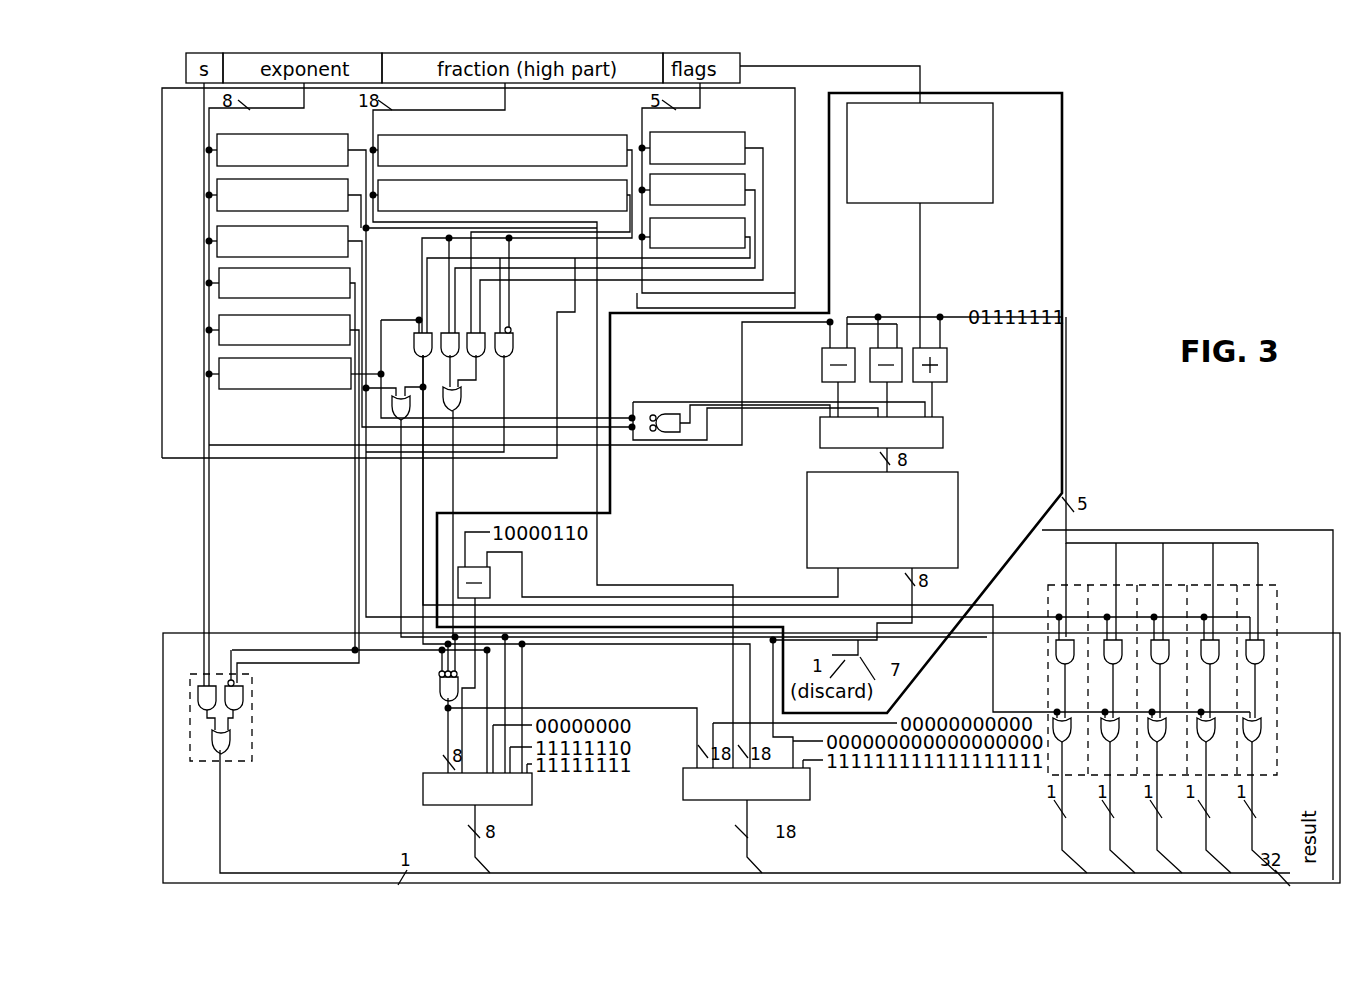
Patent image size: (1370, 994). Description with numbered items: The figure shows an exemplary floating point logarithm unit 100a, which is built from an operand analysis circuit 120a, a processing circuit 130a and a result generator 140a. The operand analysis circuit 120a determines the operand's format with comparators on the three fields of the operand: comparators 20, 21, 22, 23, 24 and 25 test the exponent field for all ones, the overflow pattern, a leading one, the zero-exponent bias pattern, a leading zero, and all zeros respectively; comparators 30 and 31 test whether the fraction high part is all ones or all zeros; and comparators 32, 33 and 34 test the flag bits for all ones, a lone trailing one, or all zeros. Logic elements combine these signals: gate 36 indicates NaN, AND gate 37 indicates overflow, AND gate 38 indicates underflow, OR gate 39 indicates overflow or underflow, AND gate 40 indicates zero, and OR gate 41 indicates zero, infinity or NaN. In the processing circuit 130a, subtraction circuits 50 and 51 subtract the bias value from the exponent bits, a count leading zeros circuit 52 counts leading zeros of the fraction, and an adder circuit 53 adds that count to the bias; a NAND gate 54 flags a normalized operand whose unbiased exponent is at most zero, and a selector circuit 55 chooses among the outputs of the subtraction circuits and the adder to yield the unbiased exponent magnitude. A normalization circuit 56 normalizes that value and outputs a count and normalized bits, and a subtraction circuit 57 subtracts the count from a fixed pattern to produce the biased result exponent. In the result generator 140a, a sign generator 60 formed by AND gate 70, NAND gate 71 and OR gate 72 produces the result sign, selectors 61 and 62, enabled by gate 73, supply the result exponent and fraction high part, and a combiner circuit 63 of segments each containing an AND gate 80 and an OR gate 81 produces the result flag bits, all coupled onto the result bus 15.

The result bus 15 is at (935, 872).
The comparator 20 is at (217, 140).
The comparator 21 is at (217, 185).
The comparator 22 is at (217, 232).
The comparator 23 is at (219, 274).
The comparator 24 is at (219, 321).
The comparator 25 is at (219, 364).
The comparator 30 is at (560, 134).
The comparator 31 is at (424, 215).
The comparator 32 is at (745, 138).
The comparator 33 is at (745, 180).
The comparator 34 is at (745, 222).
The gate 36 is at (512, 343).
The AND gate 37 is at (478, 356).
The AND gate 38 is at (445, 356).
The OR gate 39 is at (466, 398).
The AND gate 40 is at (414, 345).
The OR gate 41 is at (400, 419).
The subtraction circuit 50 is at (822, 370).
The subtraction circuit 51 is at (870, 355).
The count leading zeros circuit 52 is at (995, 140).
The adder circuit 53 is at (945, 370).
The NAND gate 54 is at (672, 412).
The selector circuit 55 is at (945, 430).
The normalization circuit 56 is at (958, 518).
The subtraction circuit 57 is at (490, 582).
The sign generator 60 is at (204, 758).
The selector 61 is at (430, 810).
The selector 62 is at (812, 808).
The combiner circuit 63 is at (1058, 680).
The AND gate 70 is at (200, 692).
The NAND gate 71 is at (244, 704).
The OR gate 72 is at (236, 742).
The gate 73 is at (436, 698).
The AND gate 80 is at (1262, 642).
The OR gate 81 is at (1262, 738).
The logarithm unit 100a is at (1196, 175).
The operand analysis circuit 120a is at (790, 112).
The processing circuit 130a is at (1064, 172).
The result generator 140a is at (1262, 525).